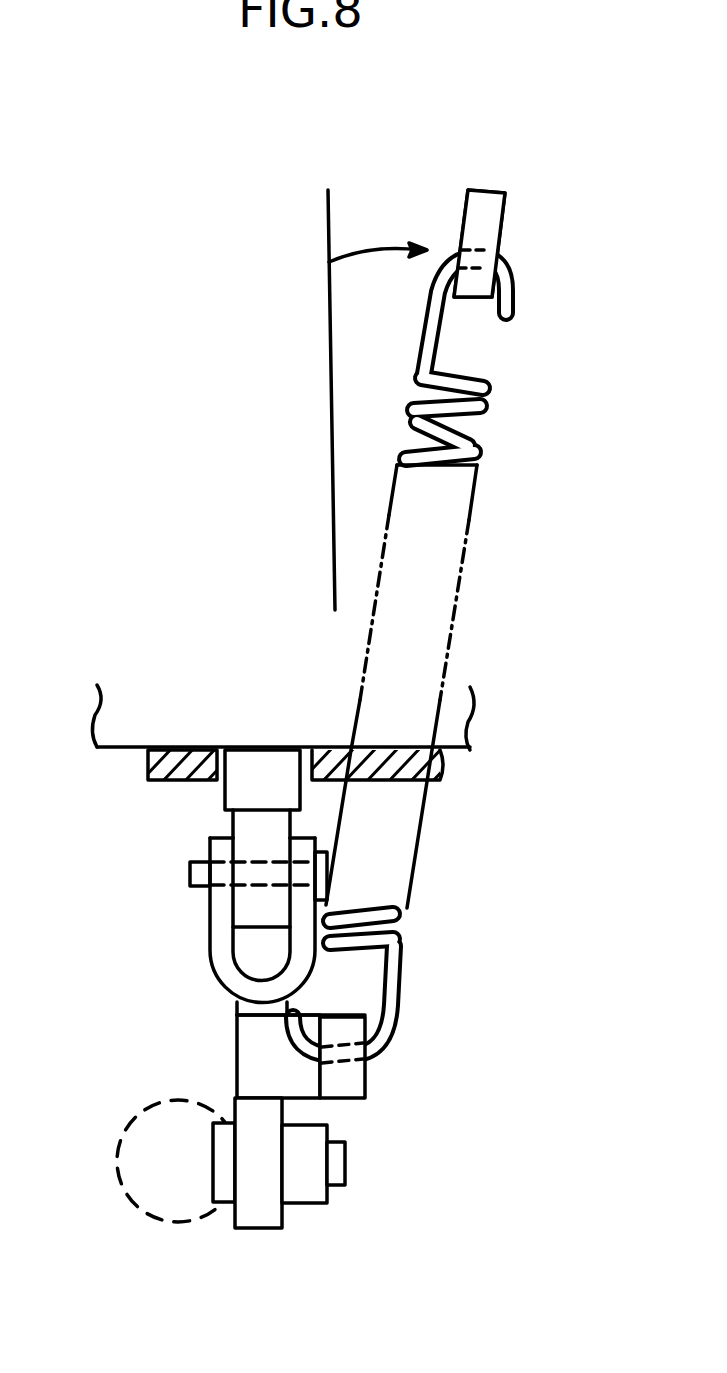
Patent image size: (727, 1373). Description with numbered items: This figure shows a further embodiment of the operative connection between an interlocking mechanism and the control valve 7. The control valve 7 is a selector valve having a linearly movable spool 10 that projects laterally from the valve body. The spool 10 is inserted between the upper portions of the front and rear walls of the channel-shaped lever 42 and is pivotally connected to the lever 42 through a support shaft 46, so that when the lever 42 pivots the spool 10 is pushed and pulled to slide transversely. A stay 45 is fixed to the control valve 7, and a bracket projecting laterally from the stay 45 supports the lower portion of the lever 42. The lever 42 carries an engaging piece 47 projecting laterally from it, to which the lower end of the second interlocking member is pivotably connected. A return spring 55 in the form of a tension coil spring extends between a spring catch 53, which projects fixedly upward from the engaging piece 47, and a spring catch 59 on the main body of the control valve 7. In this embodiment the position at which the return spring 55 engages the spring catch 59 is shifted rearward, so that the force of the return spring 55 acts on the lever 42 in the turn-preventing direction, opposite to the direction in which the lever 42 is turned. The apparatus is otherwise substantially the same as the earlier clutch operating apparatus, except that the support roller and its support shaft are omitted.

The control valve 7 is at (122, 752).
The spool 10 is at (240, 813).
The lever 42 is at (213, 968).
The stay 45 is at (398, 783).
The support shaft 46 is at (192, 880).
The engaging piece 47 is at (254, 1207).
The spring catch 53 is at (352, 1080).
The return spring 55 is at (477, 453).
The spring catch 59 is at (483, 215).